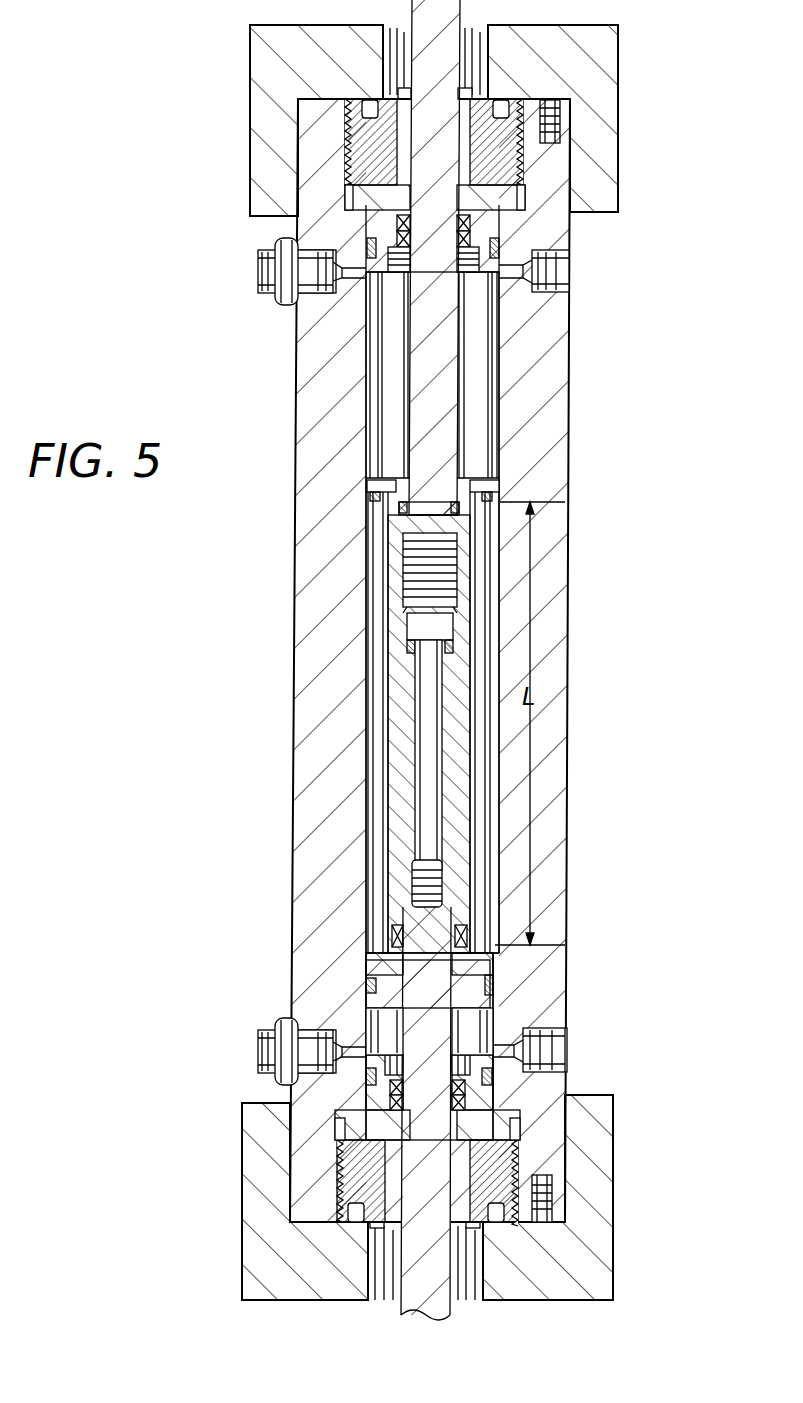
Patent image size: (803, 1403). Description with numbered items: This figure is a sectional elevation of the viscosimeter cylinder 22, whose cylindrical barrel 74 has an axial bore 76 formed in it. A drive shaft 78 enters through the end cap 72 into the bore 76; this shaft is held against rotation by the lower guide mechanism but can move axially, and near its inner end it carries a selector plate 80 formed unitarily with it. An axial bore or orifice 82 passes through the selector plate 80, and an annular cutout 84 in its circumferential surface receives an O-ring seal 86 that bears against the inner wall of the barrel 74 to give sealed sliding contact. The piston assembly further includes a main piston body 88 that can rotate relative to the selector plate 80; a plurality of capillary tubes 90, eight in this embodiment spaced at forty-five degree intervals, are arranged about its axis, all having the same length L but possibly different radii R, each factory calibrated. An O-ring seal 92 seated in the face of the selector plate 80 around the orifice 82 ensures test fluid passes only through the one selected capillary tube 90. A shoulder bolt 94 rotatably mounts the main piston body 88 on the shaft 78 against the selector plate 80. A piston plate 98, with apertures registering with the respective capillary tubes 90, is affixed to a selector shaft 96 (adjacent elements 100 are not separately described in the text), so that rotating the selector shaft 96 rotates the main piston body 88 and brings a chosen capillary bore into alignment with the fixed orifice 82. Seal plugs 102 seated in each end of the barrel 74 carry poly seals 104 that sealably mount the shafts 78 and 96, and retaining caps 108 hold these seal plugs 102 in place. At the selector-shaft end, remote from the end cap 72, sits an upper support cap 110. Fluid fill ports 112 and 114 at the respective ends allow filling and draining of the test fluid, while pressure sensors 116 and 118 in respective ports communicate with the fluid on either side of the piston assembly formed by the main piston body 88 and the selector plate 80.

The viscosimeter cylinder 22 is at (567, 822).
The end cap 72 is at (246, 1128).
The cylindrical barrel 74 is at (563, 484).
The axial bore 76 is at (487, 407).
The drive shaft 78 is at (410, 1310).
The selector plate 80 is at (493, 1003).
The axial bore or orifice 82 is at (482, 972).
The annular cutout 84 is at (372, 970).
The seal ring 86 is at (366, 988).
The main piston body 88 is at (405, 832).
The capillary tubes 90 is at (370, 757).
The O-ring seal 92 is at (470, 965).
The shoulder bolt 94 is at (423, 708).
The selector shaft 96 is at (447, 338).
The piston plate 98 is at (367, 484).
The seal ring 100 is at (372, 497).
The seal plugs 102 is at (520, 195).
The poly seals 104 is at (471, 228).
The retaining caps 108 is at (357, 152).
The upper support cap 110 is at (618, 143).
The fluid fill port 112 is at (571, 1050).
The fluid fill port 114 is at (571, 283).
The pressure sensor 116 is at (297, 1043).
The pressure sensor 118 is at (276, 295).